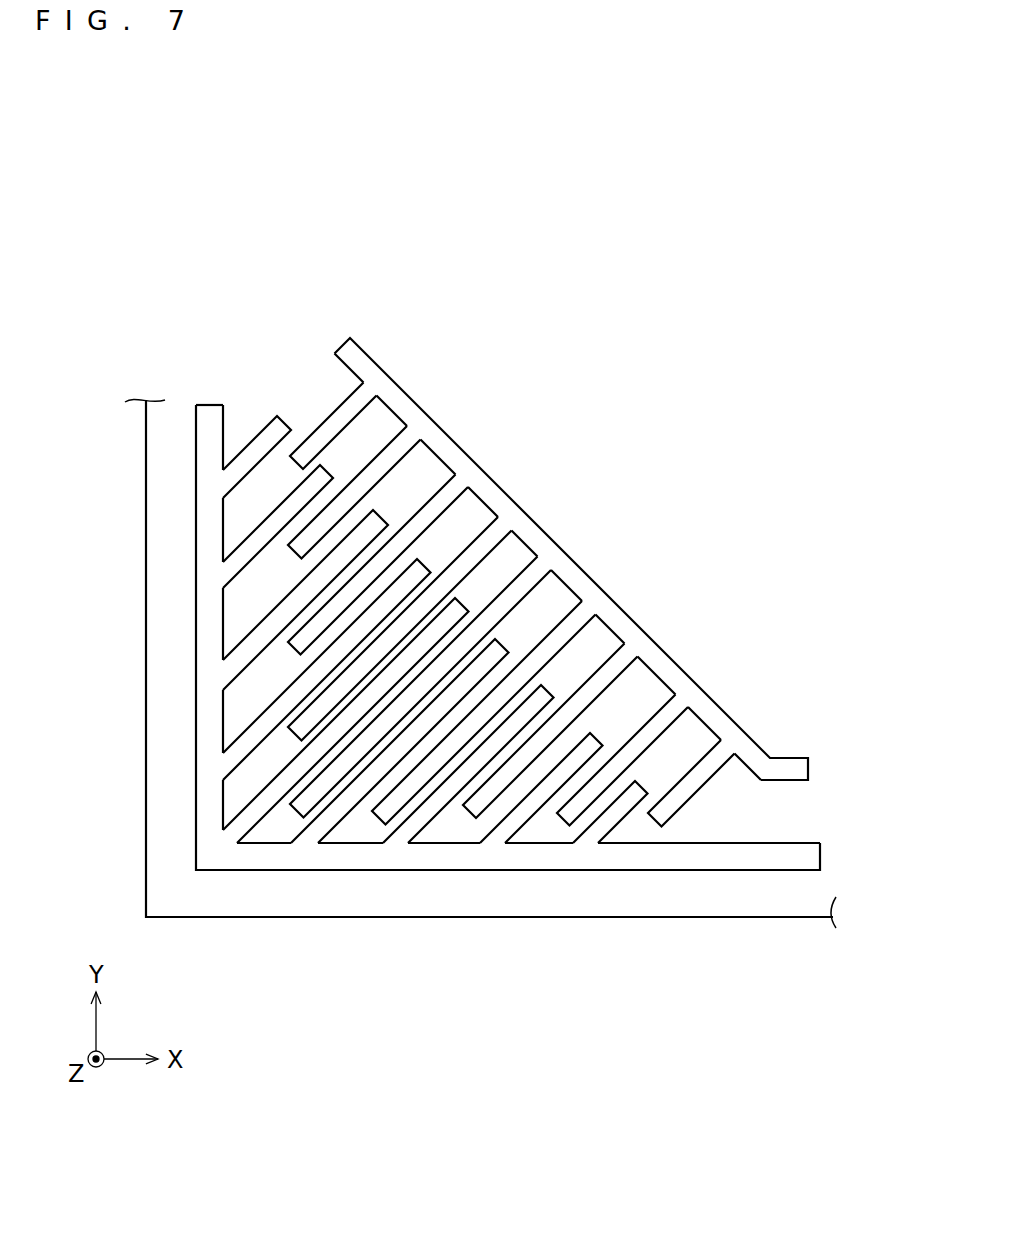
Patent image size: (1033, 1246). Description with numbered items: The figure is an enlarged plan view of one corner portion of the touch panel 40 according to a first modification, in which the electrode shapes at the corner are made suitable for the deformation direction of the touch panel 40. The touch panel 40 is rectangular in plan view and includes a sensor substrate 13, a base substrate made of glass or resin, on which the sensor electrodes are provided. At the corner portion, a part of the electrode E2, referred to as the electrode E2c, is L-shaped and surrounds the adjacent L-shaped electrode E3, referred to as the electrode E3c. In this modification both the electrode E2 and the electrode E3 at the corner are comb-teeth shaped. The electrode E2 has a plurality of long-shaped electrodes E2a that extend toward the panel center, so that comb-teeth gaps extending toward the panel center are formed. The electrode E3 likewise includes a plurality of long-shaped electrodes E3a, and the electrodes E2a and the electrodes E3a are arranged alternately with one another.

The sensor substrate 13 is at (146, 763).
The touch panel 40 is at (628, 373).
The electrode E2 is at (196, 692).
The electrode E2a is at (229, 481).
The electrode E3 is at (547, 533).
The electrode E3a is at (358, 395).